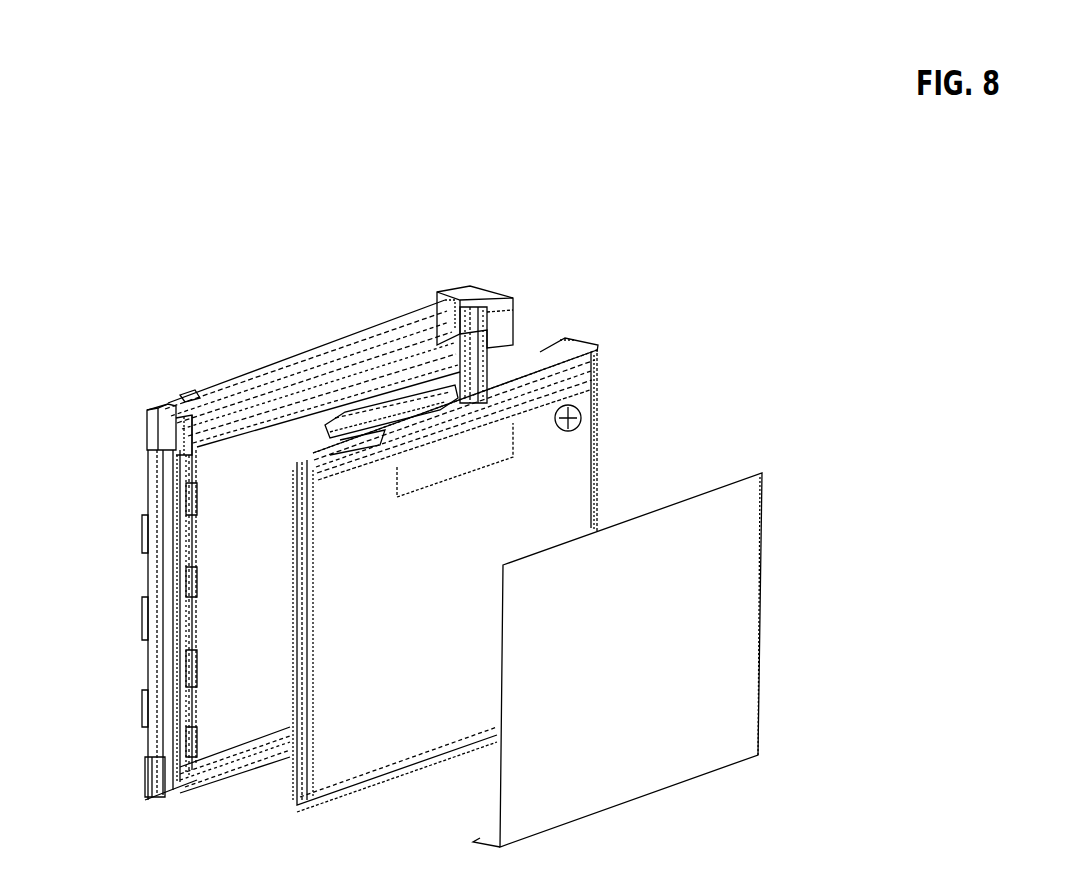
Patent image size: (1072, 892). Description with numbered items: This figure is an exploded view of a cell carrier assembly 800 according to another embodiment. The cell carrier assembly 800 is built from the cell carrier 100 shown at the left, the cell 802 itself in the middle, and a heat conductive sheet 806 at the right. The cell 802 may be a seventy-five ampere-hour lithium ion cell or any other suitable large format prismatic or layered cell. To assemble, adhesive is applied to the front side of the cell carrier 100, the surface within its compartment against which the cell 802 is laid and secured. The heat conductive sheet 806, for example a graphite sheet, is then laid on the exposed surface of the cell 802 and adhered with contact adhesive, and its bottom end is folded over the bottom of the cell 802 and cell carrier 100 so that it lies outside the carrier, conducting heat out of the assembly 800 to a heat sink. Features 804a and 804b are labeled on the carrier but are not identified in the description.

The cell carrier 100 is at (167, 371).
The cell carrier assembly 800 is at (743, 331).
The cell 802 is at (547, 498).
The upper mounting rail 804a is at (552, 340).
The mounting tab 804b is at (368, 407).
The heat conductive sheet 806 is at (713, 622).